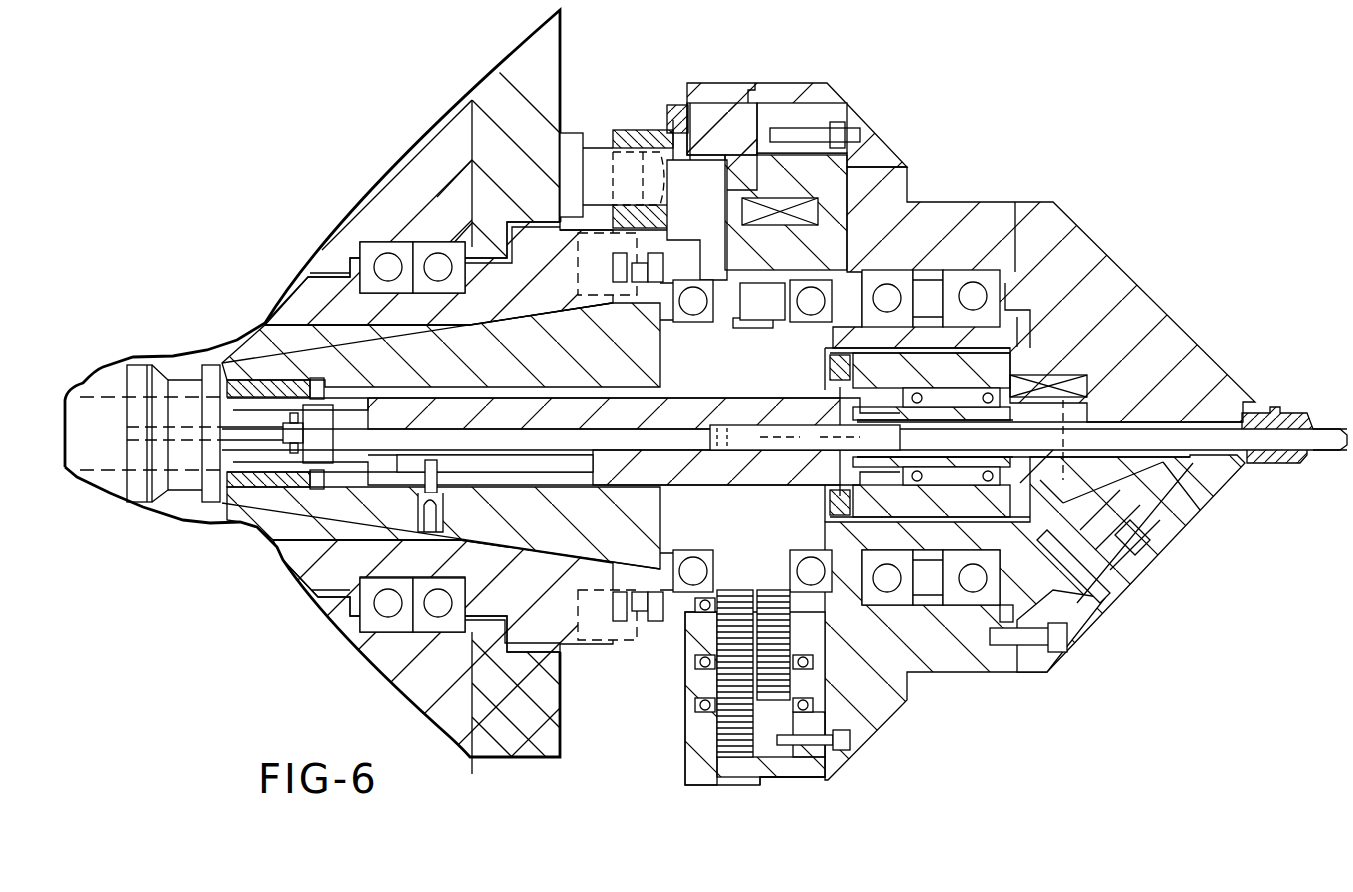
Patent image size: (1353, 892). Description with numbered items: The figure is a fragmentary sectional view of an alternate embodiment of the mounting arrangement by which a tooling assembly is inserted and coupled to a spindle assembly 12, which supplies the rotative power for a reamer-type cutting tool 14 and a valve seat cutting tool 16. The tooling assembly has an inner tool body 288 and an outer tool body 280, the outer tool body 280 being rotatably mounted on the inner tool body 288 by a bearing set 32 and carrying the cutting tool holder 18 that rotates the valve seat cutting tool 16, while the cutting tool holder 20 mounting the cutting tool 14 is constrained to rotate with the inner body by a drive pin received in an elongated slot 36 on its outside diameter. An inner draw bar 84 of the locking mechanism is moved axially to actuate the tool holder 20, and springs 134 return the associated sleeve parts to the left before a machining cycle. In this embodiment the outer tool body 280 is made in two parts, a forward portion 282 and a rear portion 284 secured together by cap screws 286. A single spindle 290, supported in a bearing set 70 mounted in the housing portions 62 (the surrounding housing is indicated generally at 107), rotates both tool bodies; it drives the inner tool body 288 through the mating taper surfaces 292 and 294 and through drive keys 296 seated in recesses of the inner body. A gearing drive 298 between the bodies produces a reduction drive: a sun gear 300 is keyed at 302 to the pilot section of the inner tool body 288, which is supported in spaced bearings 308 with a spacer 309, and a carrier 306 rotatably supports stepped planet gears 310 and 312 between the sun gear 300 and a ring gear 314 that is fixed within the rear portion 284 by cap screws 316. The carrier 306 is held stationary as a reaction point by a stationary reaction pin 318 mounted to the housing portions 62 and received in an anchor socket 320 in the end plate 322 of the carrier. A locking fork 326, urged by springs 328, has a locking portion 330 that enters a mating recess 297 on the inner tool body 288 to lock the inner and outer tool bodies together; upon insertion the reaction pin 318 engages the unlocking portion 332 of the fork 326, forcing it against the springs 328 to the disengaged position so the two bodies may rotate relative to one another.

The spindle assembly 12 is at (312, 626).
The cutting tool 14 is at (1318, 408).
The valve seat cutting tool 16 is at (1240, 470).
The cutting tool holder 18 is at (1122, 575).
The cutting tool holder 20 is at (492, 420).
The bearing set 32 is at (985, 242).
The elongated slot 36 is at (540, 475).
The housing portions 62 is at (510, 137).
The bearing set 70 is at (415, 245).
The inner draw bar 84 is at (272, 424).
The housing 107 is at (1040, 145).
The springs 134 is at (446, 512).
The outer tool body 280 is at (1195, 255).
The forward portion 282 is at (1085, 294).
The rear portion 284 is at (908, 242).
The cap screws 286 is at (1068, 645).
The inner tool body 288 is at (568, 366).
The spindle 290 is at (445, 316).
The taper surface 292 is at (480, 335).
The taper surface 294 is at (412, 340).
The drive keys 296 is at (625, 245).
The mating recess 297 is at (650, 290).
The gearing drive 298 is at (682, 700).
The sun gear 300 is at (784, 302).
The key 302 is at (812, 191).
The carrier 306 is at (747, 80).
The spaced bearings 308 is at (692, 322).
The spacer 309 is at (750, 302).
The stepped planet gear 310 is at (785, 645).
The stepped planet gear 312 is at (730, 732).
The ring gear 314 is at (772, 760).
The cap screws 316 is at (835, 745).
The stationary reaction pin 318 is at (572, 133).
The anchor socket 320 is at (620, 150).
The end plate 322 is at (678, 105).
The locking fork 326 is at (698, 172).
The springs 328 is at (835, 186).
The locking portion 330 is at (668, 258).
The unlocking portion 332 is at (688, 160).